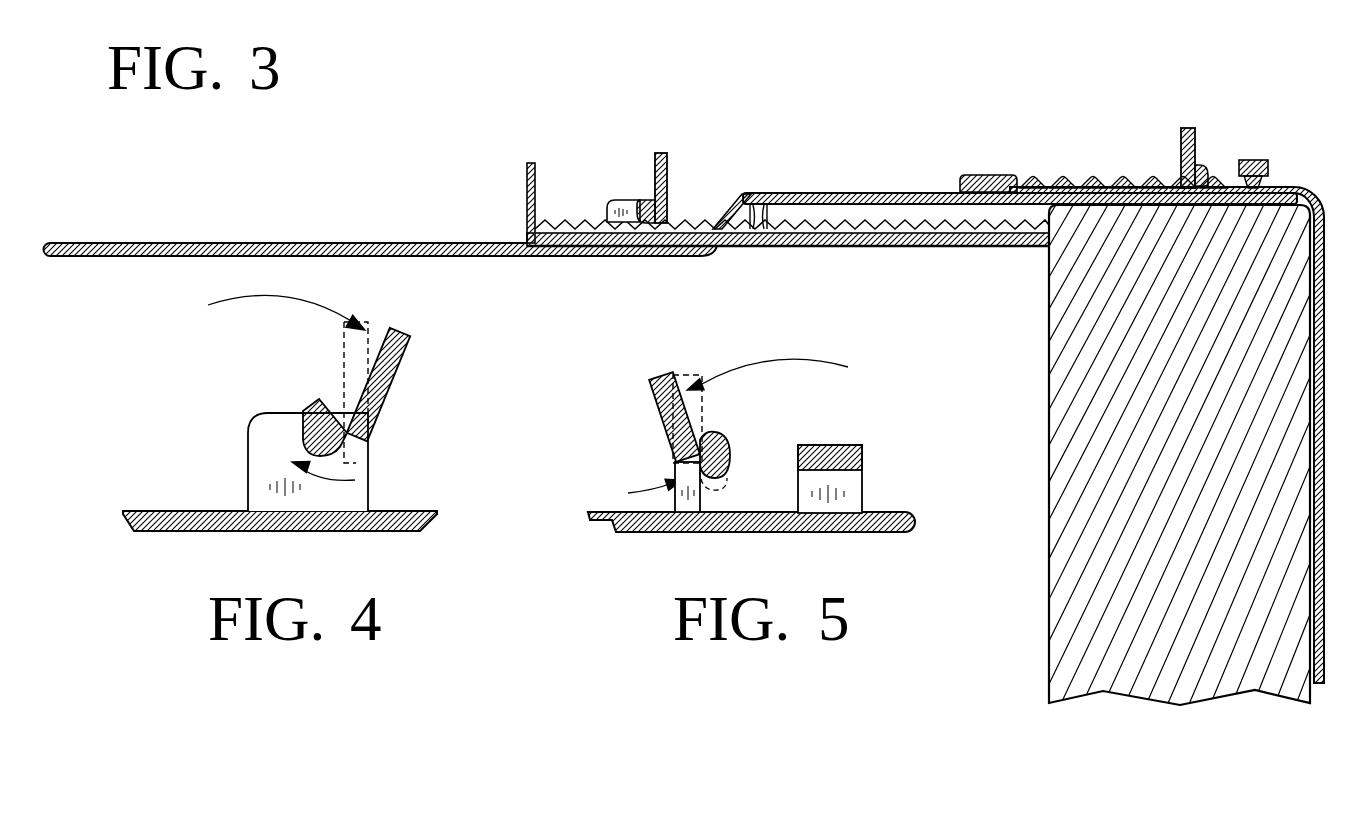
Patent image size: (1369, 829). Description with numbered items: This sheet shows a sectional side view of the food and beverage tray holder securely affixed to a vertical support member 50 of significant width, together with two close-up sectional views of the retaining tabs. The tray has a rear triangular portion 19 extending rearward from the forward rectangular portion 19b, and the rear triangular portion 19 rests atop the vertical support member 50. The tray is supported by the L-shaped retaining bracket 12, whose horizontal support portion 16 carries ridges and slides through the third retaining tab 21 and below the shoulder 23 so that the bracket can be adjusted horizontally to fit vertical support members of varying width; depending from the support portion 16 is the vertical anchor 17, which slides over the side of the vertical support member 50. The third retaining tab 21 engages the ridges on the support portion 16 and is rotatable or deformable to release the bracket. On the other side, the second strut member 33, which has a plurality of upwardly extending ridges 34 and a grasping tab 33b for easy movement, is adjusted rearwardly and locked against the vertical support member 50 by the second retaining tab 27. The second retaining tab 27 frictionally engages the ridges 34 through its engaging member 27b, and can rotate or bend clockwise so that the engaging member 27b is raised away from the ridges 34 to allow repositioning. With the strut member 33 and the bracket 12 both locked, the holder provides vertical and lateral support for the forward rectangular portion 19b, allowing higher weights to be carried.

In FIG. 3, the L-shaped retaining bracket 12 is at (1327, 186).
In FIG. 3, the support portion 16 is at (985, 175).
In FIG. 3, the vertical anchor 17 is at (1324, 327).
In FIG. 3, the rear triangular portion 19 is at (815, 193).
In FIG. 3, the forward rectangular portion 19b is at (157, 243).
In FIG. 5, the third retaining tab 21 is at (652, 376).
In FIG. 3, the shoulder 23 is at (1250, 160).
In FIG. 5, the shoulder 23 is at (837, 445).
In FIG. 3, the second retaining tab 27 is at (668, 175).
In FIG. 4, the second retaining tab 27 is at (412, 335).
In FIG. 3, the engaging member 27b is at (645, 212).
In FIG. 4, the engaging member 27b is at (302, 436).
In FIG. 3, the second strut member 33 is at (908, 247).
In FIG. 3, the grasping tab 33b is at (531, 162).
In FIG. 3, the ridges 34 is at (560, 218).
In FIG. 3, the vertical support member 50 is at (1193, 683).